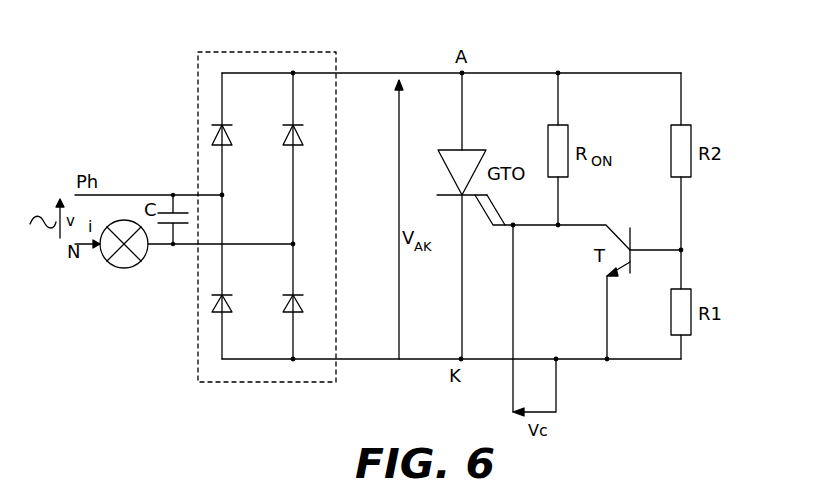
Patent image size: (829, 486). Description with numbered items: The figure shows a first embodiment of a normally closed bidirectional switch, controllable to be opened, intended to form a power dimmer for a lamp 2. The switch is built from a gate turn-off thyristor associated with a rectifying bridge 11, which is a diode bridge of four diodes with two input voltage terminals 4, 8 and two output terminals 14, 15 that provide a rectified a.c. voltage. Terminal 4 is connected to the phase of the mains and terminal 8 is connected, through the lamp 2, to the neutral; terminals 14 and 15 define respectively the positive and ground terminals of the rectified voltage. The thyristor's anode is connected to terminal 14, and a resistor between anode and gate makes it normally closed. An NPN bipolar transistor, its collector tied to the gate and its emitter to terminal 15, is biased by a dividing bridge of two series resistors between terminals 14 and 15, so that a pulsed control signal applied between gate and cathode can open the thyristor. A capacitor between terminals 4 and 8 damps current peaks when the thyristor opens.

The lamp 2 is at (124, 268).
The input voltage terminal 4 is at (222, 195).
The input voltage terminal 8 is at (293, 244).
The rectifying bridge 11 is at (256, 52).
The positive terminal 14 is at (293, 73).
The ground terminal 15 is at (293, 359).